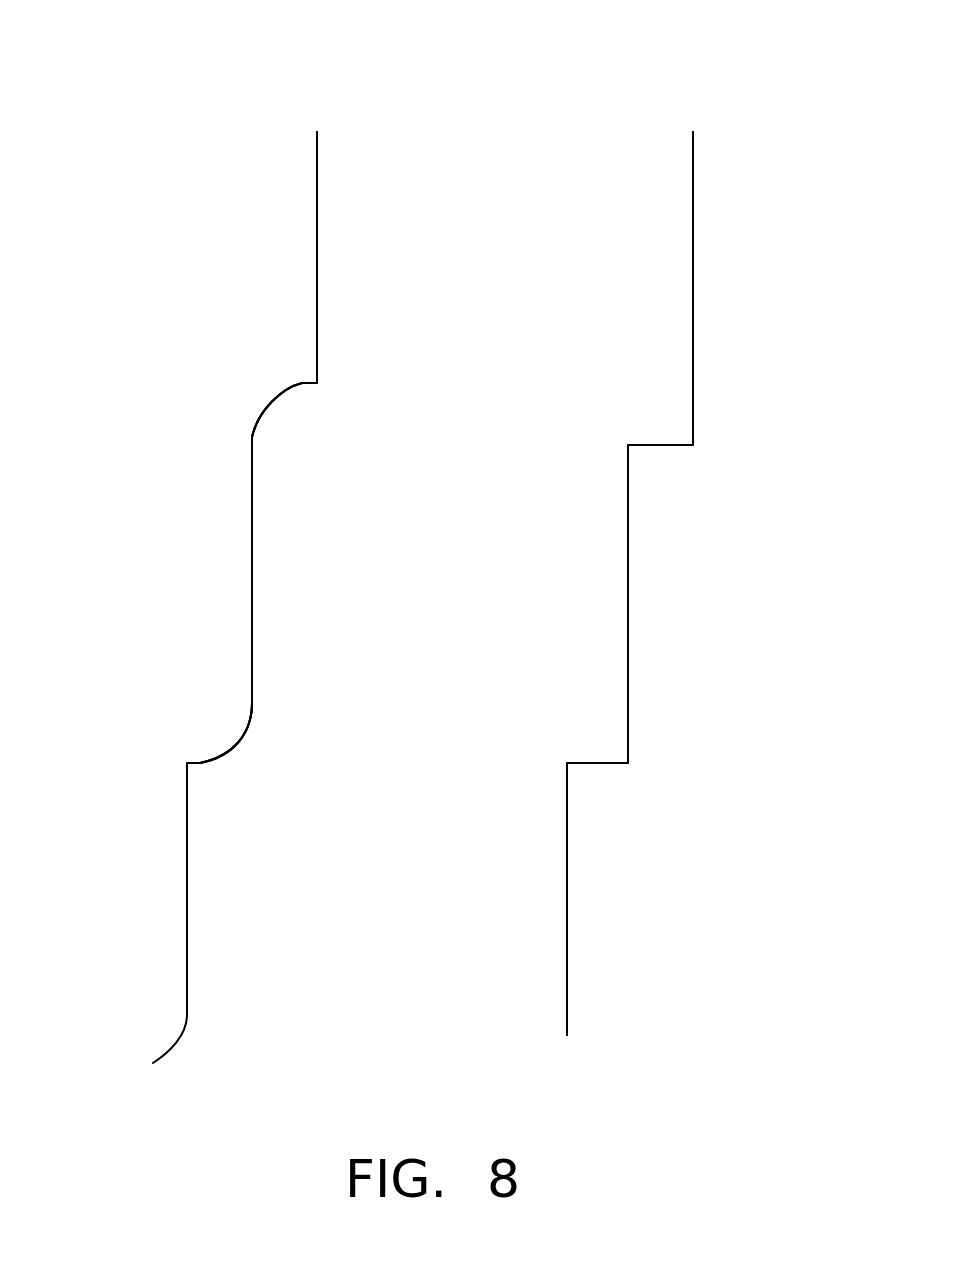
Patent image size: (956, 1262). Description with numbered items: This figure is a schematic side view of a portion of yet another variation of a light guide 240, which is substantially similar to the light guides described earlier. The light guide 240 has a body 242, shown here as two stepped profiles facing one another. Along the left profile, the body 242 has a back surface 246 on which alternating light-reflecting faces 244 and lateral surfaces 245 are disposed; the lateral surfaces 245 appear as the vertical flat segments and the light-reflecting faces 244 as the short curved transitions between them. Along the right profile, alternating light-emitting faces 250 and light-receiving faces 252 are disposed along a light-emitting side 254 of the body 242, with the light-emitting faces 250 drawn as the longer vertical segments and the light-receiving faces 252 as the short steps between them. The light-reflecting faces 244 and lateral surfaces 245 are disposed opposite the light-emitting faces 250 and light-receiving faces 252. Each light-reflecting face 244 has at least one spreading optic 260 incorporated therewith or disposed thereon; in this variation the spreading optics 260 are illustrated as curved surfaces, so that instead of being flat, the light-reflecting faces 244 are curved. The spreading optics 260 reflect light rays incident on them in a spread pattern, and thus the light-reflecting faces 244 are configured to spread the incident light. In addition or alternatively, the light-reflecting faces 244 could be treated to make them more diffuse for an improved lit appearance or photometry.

The light guide 240 is at (176, 92).
The body 242 is at (462, 193).
The light-reflecting faces 244 is at (289, 411).
The lateral surfaces 245 is at (317, 203).
The back surface 246 is at (238, 492).
The light-emitting faces 250 is at (693, 193).
The light-receiving faces 252 is at (653, 447).
The light-emitting side 254 is at (710, 383).
The spreading optic 260 is at (255, 428).